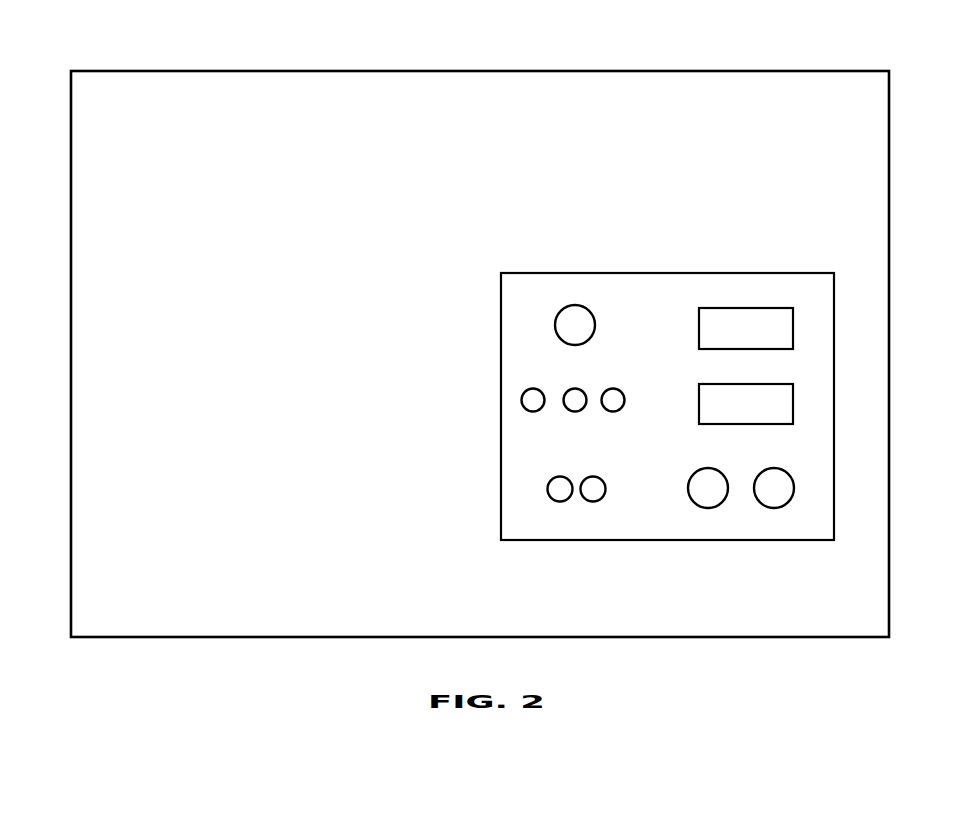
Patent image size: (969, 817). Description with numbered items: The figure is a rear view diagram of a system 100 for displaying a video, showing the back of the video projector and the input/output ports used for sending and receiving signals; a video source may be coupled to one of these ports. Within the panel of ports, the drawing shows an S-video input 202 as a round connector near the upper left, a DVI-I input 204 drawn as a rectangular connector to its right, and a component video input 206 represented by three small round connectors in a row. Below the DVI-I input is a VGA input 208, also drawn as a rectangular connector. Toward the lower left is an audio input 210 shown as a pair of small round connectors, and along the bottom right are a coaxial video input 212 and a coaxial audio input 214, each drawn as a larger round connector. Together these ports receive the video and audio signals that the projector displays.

The system 100 is at (500, 42).
The S-video input 202 is at (586, 305).
The DVI-I input 204 is at (719, 308).
The component video input 206 is at (613, 388).
The VGA input 208 is at (777, 384).
The audio input 210 is at (607, 465).
The coaxial video input 212 is at (687, 490).
The coaxial audio input 214 is at (755, 500).